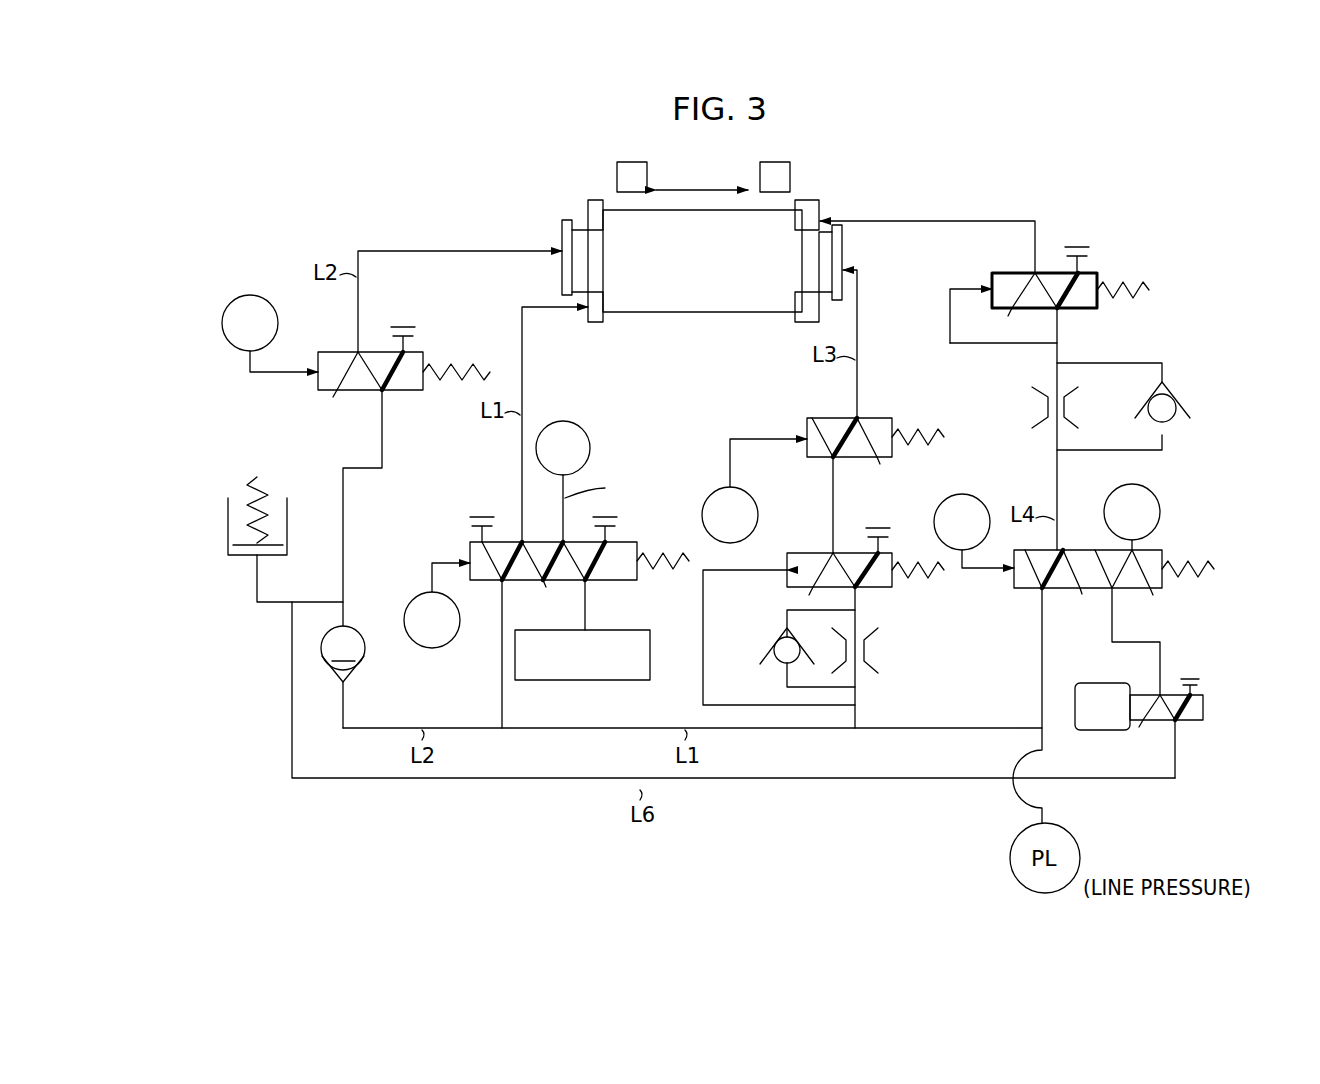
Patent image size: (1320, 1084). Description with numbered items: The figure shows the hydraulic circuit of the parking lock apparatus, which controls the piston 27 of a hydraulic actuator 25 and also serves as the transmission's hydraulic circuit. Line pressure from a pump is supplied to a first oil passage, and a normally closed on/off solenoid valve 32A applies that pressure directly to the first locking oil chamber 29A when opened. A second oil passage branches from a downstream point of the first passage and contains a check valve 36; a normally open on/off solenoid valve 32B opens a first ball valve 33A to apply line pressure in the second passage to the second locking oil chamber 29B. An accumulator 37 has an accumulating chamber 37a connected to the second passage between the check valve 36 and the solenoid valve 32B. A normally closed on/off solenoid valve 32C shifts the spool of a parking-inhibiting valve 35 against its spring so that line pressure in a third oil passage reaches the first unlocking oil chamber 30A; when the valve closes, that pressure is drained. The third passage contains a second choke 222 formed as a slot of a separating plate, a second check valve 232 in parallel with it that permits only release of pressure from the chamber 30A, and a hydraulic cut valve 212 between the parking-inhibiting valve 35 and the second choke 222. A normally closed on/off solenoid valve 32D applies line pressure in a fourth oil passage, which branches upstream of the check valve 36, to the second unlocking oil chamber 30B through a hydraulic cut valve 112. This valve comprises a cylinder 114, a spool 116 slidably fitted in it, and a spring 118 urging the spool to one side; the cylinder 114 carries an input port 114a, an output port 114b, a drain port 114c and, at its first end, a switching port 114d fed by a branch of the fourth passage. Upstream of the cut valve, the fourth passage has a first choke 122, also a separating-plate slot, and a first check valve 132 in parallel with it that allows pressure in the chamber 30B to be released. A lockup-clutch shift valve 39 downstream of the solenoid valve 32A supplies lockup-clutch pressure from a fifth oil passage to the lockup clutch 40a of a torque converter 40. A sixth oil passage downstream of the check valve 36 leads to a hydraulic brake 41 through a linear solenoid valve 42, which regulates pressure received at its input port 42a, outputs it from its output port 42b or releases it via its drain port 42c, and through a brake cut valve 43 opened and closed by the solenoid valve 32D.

The hydraulic actuator 25 is at (557, 187).
The piston 27 is at (757, 314).
The first locking oil chamber 29A is at (600, 322).
The second locking oil chamber 29B is at (560, 234).
The first unlocking oil chamber 30A is at (843, 245).
The second unlocking oil chamber 30B is at (812, 200).
The on/off solenoid valve 32A is at (415, 595).
The on/off solenoid valve 32B is at (221, 323).
The on/off solenoid valve 32C is at (725, 488).
The on/off solenoid valve 32D is at (985, 505).
The first ball valve 33A is at (405, 392).
The parking-inhibiting valve 35 is at (810, 416).
The check valve 36 is at (343, 654).
The accumulator 37 is at (247, 470).
The accumulating chamber 37a is at (250, 554).
The lockup-clutch shift valve 39 is at (622, 585).
The torque converter 40 is at (583, 423).
The lockup clutch 40a is at (590, 443).
The hydraulic brake 41 is at (1151, 500).
The linear solenoid valve 42 is at (1088, 731).
The input port 42a is at (1175, 721).
The output port 42b is at (1160, 694).
The drain port 42c is at (1143, 723).
The brake cut valve 43 is at (1166, 550).
The hydraulic cut valve 112 is at (1055, 261).
The cylinder 114 is at (1088, 272).
The input port 114a is at (1060, 310).
The output port 114b is at (1030, 268).
The drain port 114c is at (1013, 310).
The switching port 114d is at (985, 287).
The spool 116 is at (1085, 304).
The spring 118 is at (1138, 287).
The first choke 122 is at (1028, 406).
The first check valve 132 is at (1178, 407).
The hydraulic cut valve 212 is at (823, 549).
The second choke 222 is at (868, 650).
The second check valve 232 is at (773, 640).